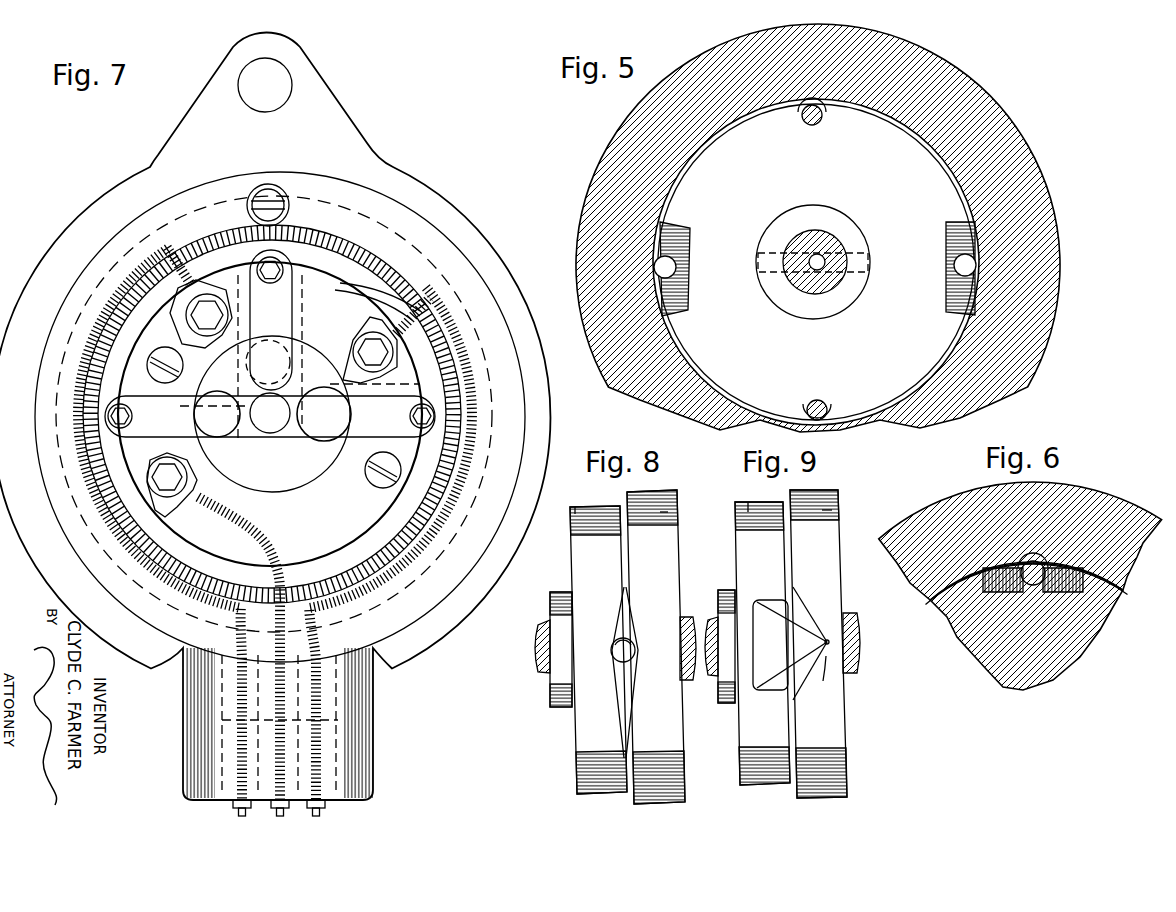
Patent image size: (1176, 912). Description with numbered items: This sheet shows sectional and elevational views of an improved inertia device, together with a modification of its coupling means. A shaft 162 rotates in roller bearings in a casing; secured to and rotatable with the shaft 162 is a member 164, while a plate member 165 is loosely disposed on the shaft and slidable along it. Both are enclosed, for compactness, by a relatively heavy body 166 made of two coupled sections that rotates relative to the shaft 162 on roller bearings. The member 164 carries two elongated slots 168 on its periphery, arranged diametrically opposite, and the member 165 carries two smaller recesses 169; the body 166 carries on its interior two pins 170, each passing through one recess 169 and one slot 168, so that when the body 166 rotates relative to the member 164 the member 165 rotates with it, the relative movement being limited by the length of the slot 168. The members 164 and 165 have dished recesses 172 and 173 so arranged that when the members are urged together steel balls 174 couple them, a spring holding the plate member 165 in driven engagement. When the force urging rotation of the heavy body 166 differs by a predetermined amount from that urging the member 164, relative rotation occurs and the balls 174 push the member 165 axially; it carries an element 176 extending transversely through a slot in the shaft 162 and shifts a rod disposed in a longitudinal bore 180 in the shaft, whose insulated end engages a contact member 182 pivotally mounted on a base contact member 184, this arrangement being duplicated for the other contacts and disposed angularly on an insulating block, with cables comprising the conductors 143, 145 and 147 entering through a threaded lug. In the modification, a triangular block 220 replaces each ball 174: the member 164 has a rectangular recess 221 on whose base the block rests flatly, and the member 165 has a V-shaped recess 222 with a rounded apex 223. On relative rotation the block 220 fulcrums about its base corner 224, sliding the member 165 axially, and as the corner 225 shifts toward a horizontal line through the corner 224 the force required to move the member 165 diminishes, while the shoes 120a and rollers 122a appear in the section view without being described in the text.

In FIG. 7, the conductor 143 is at (273, 555).
In FIG. 7, the conductor 145 is at (382, 306).
In FIG. 7, the conductor 147 is at (229, 318).
In FIG. 7, the contact member 182 is at (295, 393).
In FIG. 7, the base contact member 184 is at (290, 346).
In FIG. 5, the shoe 120a is at (689, 298).
In FIG. 5, the roller 122a is at (678, 266).
In FIG. 5, the shaft 162 is at (817, 290).
In FIG. 8, the shaft 162 is at (537, 667).
In FIG. 9, the shaft 162 is at (848, 633).
In FIG. 8, the member 164 is at (587, 550).
In FIG. 9, the member 164 is at (747, 540).
In FIG. 6, the member 164 is at (1083, 638).
In FIG. 5, the plate member 165 is at (930, 180).
In FIG. 8, the plate member 165 is at (670, 540).
In FIG. 9, the plate member 165 is at (827, 547).
In FIG. 6, the plate member 165 is at (1080, 573).
In FIG. 5, the heavy body 166 is at (993, 120).
In FIG. 6, the heavy body 166 is at (1087, 500).
In FIG. 8, the elongated slot 168 is at (574, 510).
In FIG. 9, the elongated slot 168 is at (748, 510).
In FIG. 6, the elongated slot 168 is at (988, 593).
In FIG. 5, the recess 169 is at (816, 123).
In FIG. 8, the recess 169 is at (665, 512).
In FIG. 9, the recess 169 is at (828, 510).
In FIG. 6, the recess 169 is at (1031, 585).
In FIG. 5, the pin 170 is at (803, 121).
In FIG. 6, the pin 170 is at (1033, 563).
In FIG. 8, the dished recess 172 is at (620, 678).
In FIG. 8, the dished recess 173 is at (633, 677).
In FIG. 8, the steel ball 174 is at (618, 652).
In FIG. 5, the element 176 is at (857, 252).
In FIG. 5, the bore 180 is at (807, 270).
In FIG. 9, the triangular block 220 is at (790, 653).
In FIG. 9, the rectangular recess 221 is at (773, 602).
In FIG. 9, the V-shaped recess 222 is at (810, 607).
In FIG. 9, the rounded apex 223 is at (816, 660).
In FIG. 9, the base corner 224 is at (755, 614).
In FIG. 9, the corner 225 is at (823, 642).